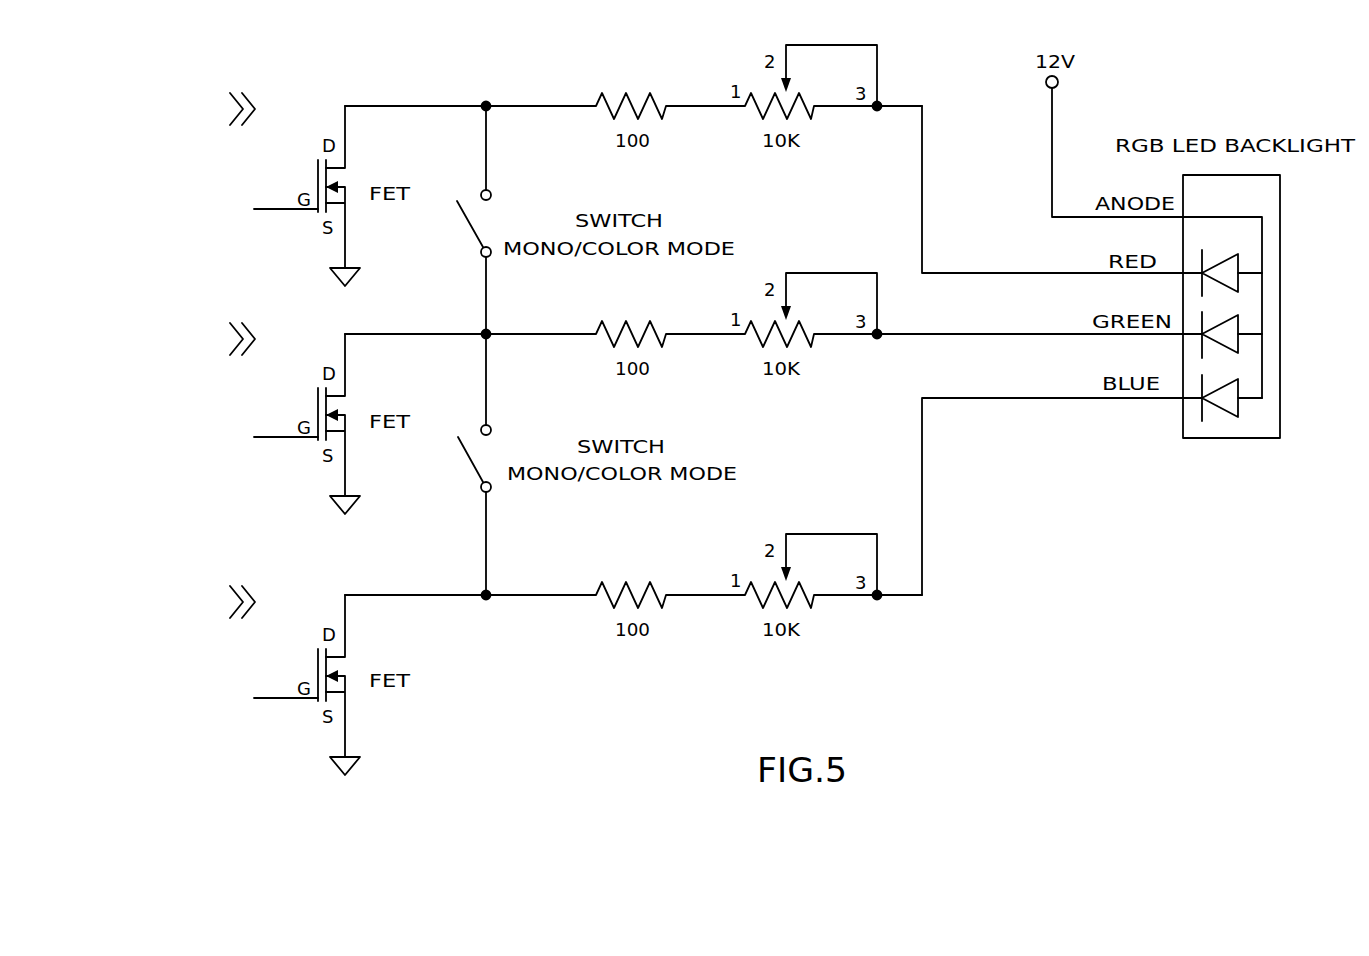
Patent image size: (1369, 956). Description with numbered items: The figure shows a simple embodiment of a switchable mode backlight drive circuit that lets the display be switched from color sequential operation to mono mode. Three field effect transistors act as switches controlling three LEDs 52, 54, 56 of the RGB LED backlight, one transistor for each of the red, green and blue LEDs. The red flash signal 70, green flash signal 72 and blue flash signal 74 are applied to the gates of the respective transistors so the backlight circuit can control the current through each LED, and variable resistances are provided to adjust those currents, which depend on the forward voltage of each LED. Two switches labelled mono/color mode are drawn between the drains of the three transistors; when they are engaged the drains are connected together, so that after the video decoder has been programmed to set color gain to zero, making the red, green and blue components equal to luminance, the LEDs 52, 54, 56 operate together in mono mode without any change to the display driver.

The LED 52 is at (1240, 266).
The LED 54 is at (1240, 327).
The LED 56 is at (1240, 389).
The red flash signal input 70 is at (173, 218).
The green flash signal input 72 is at (173, 448).
The blue flash signal input 74 is at (173, 712).